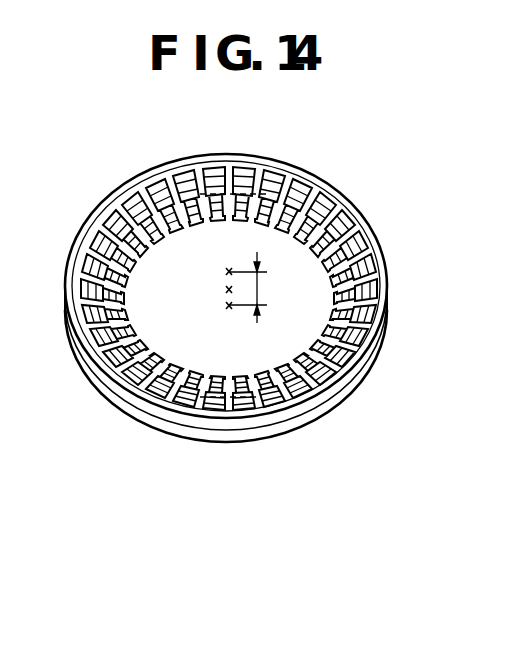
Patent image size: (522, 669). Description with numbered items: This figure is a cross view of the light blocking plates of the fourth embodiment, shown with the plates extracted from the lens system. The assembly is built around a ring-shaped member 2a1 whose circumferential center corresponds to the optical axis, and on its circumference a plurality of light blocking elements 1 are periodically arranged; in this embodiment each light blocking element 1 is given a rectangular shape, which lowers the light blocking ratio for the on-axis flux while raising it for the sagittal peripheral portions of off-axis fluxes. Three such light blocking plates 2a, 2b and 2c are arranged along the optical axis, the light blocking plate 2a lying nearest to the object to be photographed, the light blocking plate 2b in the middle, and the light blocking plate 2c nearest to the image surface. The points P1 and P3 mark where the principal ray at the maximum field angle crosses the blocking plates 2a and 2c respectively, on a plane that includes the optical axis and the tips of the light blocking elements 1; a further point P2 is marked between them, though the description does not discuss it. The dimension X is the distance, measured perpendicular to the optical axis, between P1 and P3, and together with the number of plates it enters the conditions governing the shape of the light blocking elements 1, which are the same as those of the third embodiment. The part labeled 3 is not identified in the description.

The light blocking element 1 is at (288, 186).
The ring-shaped member 2a1 is at (389, 258).
The light blocking plate 2a is at (235, 425).
The light blocking plate 2b is at (282, 433).
The light blocking plate 2c is at (332, 418).
The tooth 3 is at (208, 410).
The crossing point of the principal ray on plate 2a P1 is at (226, 307).
The second position P2 is at (226, 290).
The crossing point of the principal ray on plate 2c P3 is at (226, 271).
The distance between P1 and P3 X is at (256, 287).